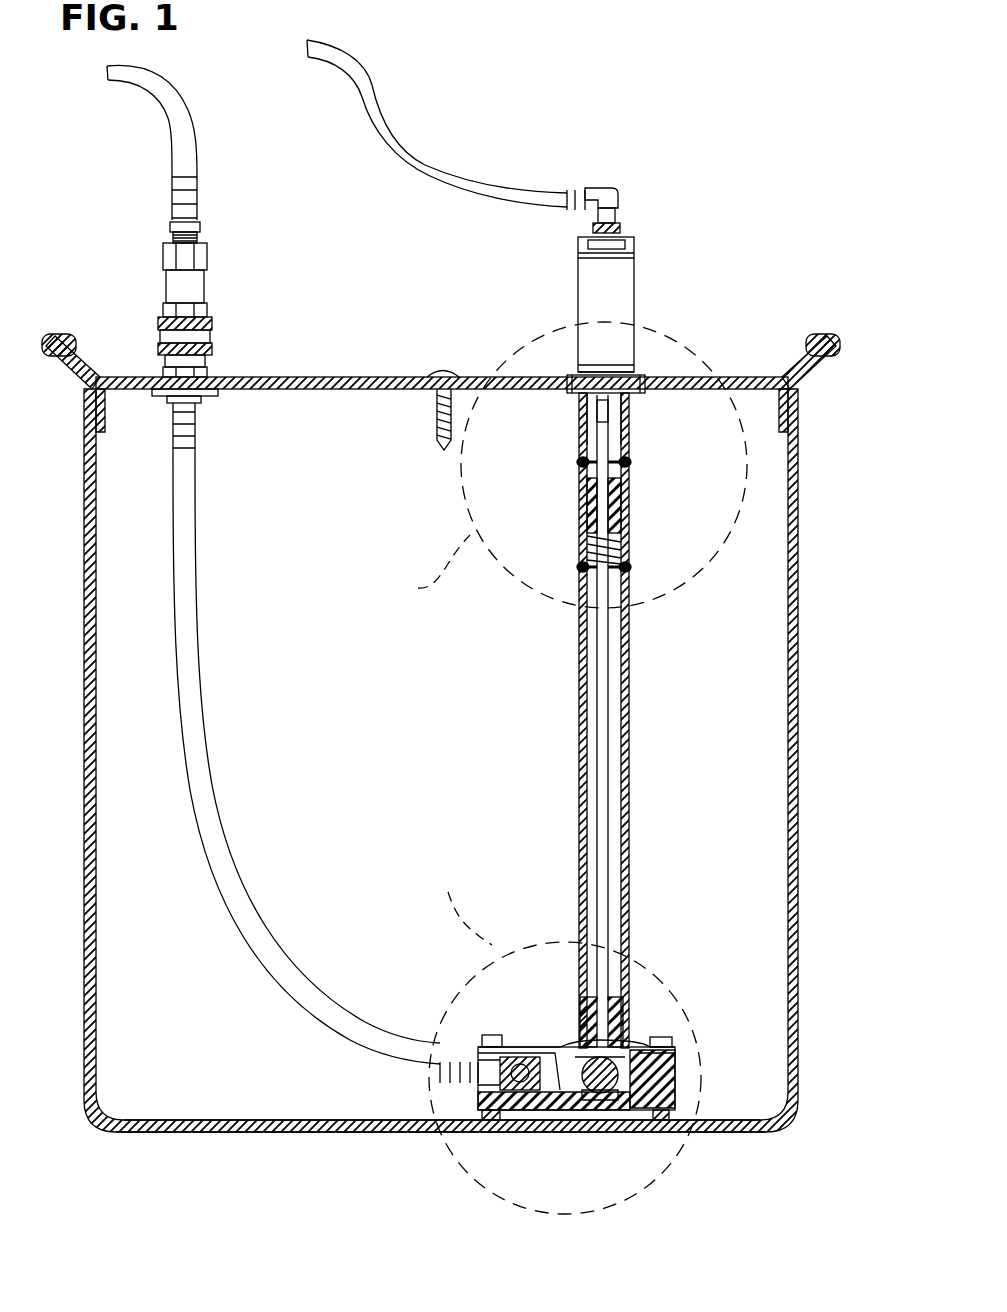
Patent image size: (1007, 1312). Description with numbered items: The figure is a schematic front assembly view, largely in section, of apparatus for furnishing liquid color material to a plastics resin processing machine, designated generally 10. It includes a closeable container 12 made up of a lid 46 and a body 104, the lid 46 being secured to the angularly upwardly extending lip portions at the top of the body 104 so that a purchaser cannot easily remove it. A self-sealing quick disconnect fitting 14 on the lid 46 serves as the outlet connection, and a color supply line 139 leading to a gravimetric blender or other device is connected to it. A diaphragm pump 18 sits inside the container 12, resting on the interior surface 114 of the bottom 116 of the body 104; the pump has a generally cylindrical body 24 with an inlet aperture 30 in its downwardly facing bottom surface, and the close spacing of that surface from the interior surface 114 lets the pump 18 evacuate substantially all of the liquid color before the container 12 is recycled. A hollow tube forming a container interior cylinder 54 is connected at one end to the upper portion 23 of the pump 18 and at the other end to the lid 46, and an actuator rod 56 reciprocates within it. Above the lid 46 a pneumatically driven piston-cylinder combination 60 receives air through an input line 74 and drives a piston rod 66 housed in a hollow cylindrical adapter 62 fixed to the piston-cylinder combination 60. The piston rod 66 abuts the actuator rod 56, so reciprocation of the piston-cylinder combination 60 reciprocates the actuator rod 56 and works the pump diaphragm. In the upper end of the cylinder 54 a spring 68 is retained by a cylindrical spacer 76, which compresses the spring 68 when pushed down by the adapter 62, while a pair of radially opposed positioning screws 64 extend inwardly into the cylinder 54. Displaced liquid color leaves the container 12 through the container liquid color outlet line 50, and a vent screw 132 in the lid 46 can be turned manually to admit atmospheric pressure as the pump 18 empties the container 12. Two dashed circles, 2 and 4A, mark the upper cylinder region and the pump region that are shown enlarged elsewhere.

The apparatus for furnishing liquid color material 10 is at (771, 290).
The closeable container 12 is at (449, 796).
The self-sealing quick disconnect fitting 14 is at (206, 292).
The diaphragm pump 18 is at (625, 1066).
The pump upper cover 23 is at (536, 1046).
The pump body 24 is at (677, 1080).
The first aperture 30 is at (605, 1121).
The lid 46 is at (290, 377).
The container liquid color outlet line 50 is at (201, 822).
The container interior cylinder 54 is at (604, 720).
The actuator rod 56 is at (604, 762).
The piston-cylinder combination 60 is at (628, 286).
The hollow cylindrical adapter 62 is at (638, 437).
The screws 64 is at (578, 462).
The piston rod 66 is at (600, 408).
The spring 68 is at (629, 548).
The input line 74 is at (427, 148).
The cylindrical spacer 76 is at (627, 514).
The container body 104 is at (85, 728).
The interior surface 114 is at (204, 1119).
The bottom 116 is at (340, 1133).
The vent screw 132 is at (445, 373).
The color supply line 139 is at (199, 140).
The detail view 2 is at (434, 569).
The detail view 4A is at (458, 904).